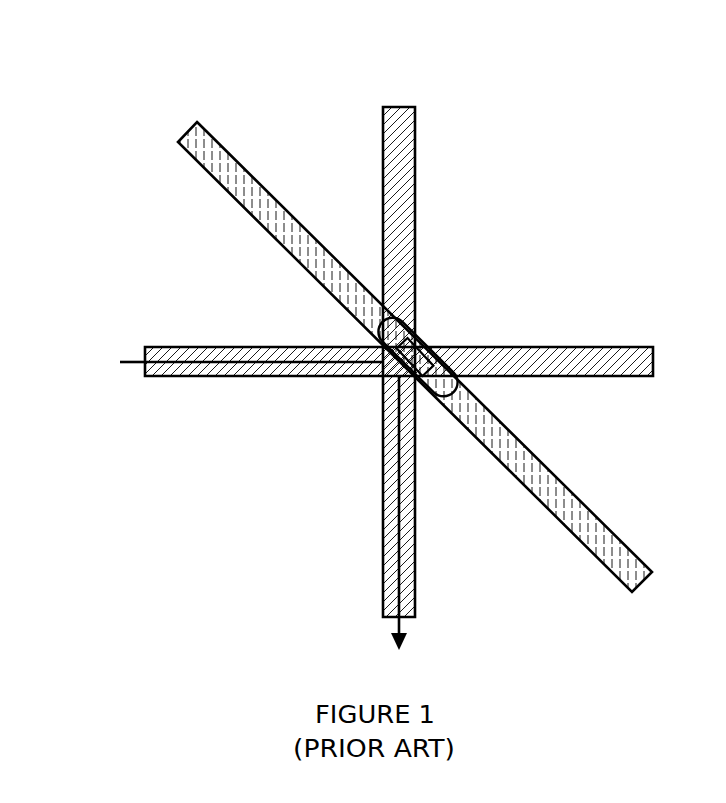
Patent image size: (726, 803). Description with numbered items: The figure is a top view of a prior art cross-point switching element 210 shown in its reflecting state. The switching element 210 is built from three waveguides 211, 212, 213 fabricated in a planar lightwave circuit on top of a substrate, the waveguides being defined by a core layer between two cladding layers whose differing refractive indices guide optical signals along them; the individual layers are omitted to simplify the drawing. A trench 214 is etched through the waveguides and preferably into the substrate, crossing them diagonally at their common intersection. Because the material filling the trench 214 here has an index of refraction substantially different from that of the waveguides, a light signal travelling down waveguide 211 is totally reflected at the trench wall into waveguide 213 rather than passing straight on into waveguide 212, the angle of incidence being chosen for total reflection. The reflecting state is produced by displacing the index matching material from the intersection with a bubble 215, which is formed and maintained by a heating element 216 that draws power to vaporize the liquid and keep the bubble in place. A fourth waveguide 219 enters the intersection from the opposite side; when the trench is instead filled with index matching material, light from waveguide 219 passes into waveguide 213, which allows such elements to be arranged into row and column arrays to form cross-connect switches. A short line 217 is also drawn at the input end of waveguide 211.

The cross-point switching element 210 is at (524, 154).
The waveguide 211 is at (185, 373).
The waveguide 212 is at (622, 370).
The waveguide 213 is at (434, 484).
The trench 214 is at (415, 357).
The bubble 215 is at (406, 330).
The heating element 216 is at (440, 352).
The input line 217 is at (128, 363).
The fourth waveguide 219 is at (412, 164).